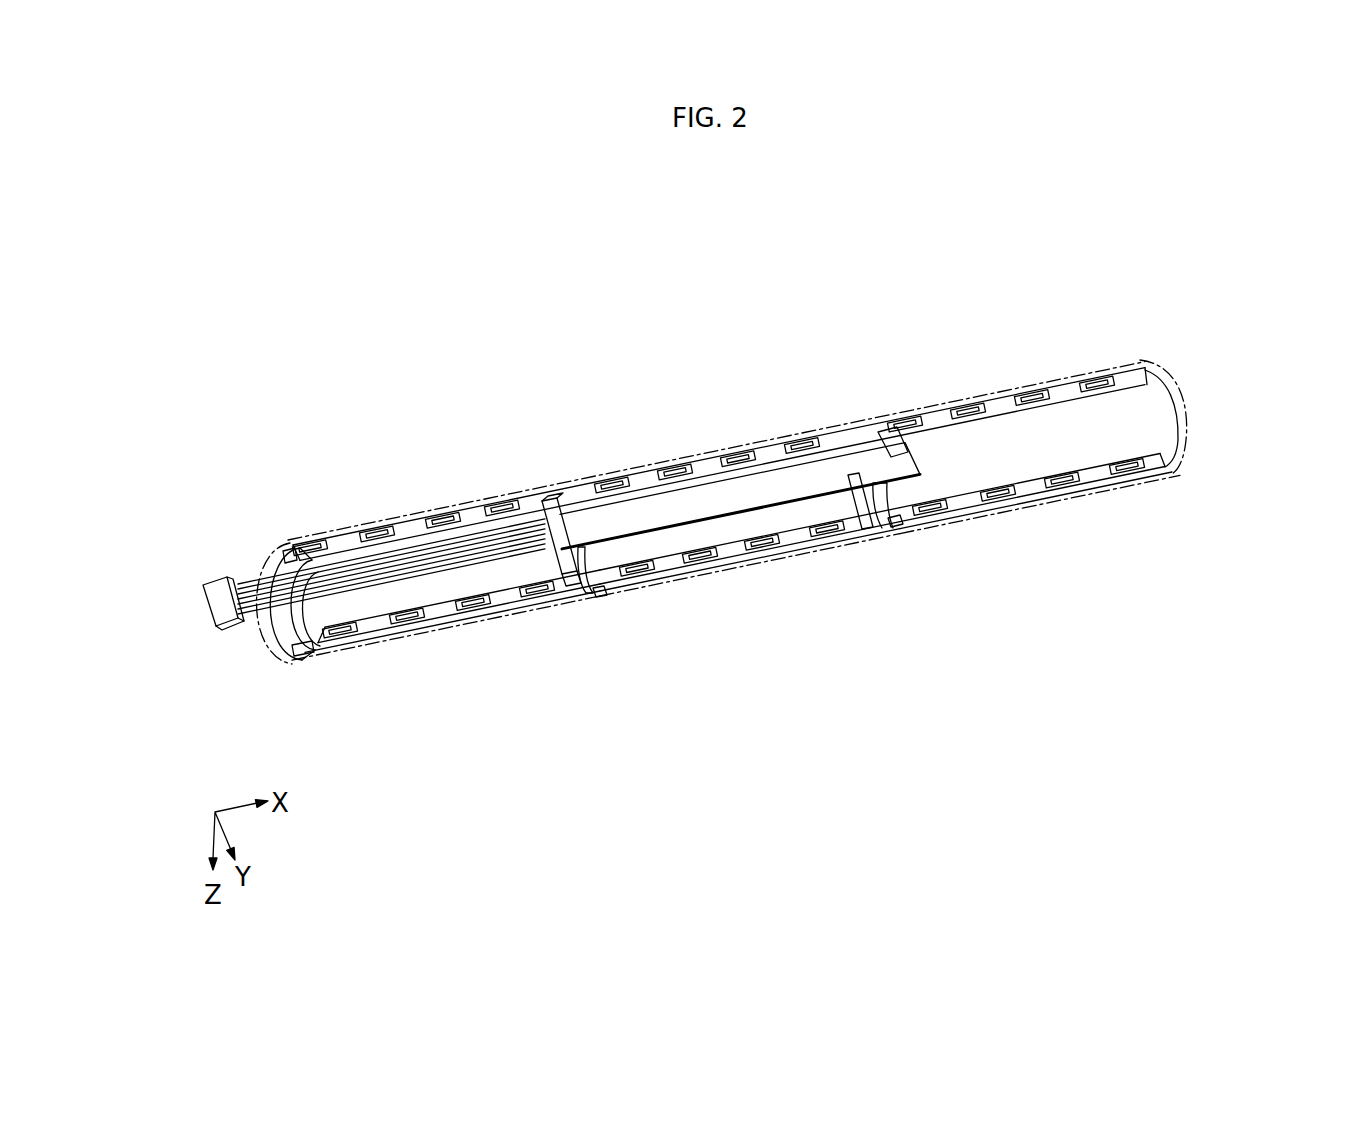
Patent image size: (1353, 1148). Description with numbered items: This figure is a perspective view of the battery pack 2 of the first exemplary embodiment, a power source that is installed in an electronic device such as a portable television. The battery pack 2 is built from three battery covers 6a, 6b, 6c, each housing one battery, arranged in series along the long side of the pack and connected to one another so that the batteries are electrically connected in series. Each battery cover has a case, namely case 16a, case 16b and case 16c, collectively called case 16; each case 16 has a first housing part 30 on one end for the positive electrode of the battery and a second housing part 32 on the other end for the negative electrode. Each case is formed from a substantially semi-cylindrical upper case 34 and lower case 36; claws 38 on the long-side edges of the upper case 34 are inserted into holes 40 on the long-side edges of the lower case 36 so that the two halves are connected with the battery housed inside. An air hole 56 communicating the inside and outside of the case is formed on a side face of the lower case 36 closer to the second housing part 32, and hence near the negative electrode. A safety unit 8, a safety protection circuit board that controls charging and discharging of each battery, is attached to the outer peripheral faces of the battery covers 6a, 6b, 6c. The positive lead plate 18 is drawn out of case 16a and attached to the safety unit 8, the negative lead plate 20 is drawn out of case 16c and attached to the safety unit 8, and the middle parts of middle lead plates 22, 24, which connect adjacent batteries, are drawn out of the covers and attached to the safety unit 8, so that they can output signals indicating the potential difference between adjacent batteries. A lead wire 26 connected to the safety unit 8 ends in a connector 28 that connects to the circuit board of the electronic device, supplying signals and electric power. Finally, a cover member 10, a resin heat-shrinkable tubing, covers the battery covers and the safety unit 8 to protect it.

The battery pack 2 is at (921, 306).
The battery cover 6a is at (1085, 460).
The battery cover 6b is at (822, 512).
The battery cover 6c is at (428, 594).
The safety unit 8 is at (695, 495).
The cover member 10 is at (1178, 458).
The case 16 is at (188, 632).
The case 16a is at (1066, 402).
The case 16b is at (757, 527).
The case 16c is at (500, 585).
The positive lead plate 18 is at (884, 428).
The negative lead plate 20 is at (565, 590).
The middle lead plate 22 is at (861, 522).
The middle lead plate 24 is at (546, 507).
The lead wire 26 is at (352, 567).
The connector 28 is at (203, 598).
The first housing part 30 is at (517, 508).
The second housing part 32 is at (283, 557).
The upper case 34 is at (280, 622).
The lower case 36 is at (305, 636).
The claws 38 is at (1060, 480).
The holes 40 is at (1067, 490).
The air hole 56 is at (307, 607).